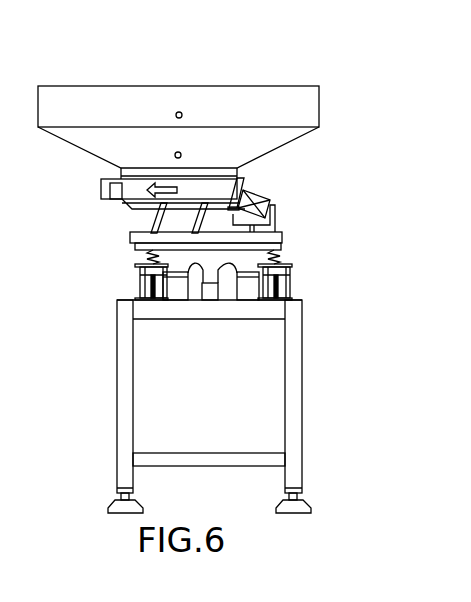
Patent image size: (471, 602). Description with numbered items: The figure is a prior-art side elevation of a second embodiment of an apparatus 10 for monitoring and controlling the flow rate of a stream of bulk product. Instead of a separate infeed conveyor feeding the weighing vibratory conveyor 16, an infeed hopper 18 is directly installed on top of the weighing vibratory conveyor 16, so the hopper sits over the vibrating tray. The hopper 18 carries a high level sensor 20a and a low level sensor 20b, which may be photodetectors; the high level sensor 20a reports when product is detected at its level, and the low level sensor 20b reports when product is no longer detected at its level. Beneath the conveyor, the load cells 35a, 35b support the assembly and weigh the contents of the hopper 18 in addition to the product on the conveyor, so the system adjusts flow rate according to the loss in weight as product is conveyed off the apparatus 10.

The apparatus for monitoring and controlling the flow rate of a stream of bulk produ 10 is at (348, 98).
The weighing vibratory conveyor 16 is at (76, 213).
The infeed hopper 18 is at (100, 84).
The high level sensor 20a is at (176, 115).
The low level sensor 20b is at (181, 154).
The load cell 35a is at (140, 298).
The load cell 35b is at (288, 298).